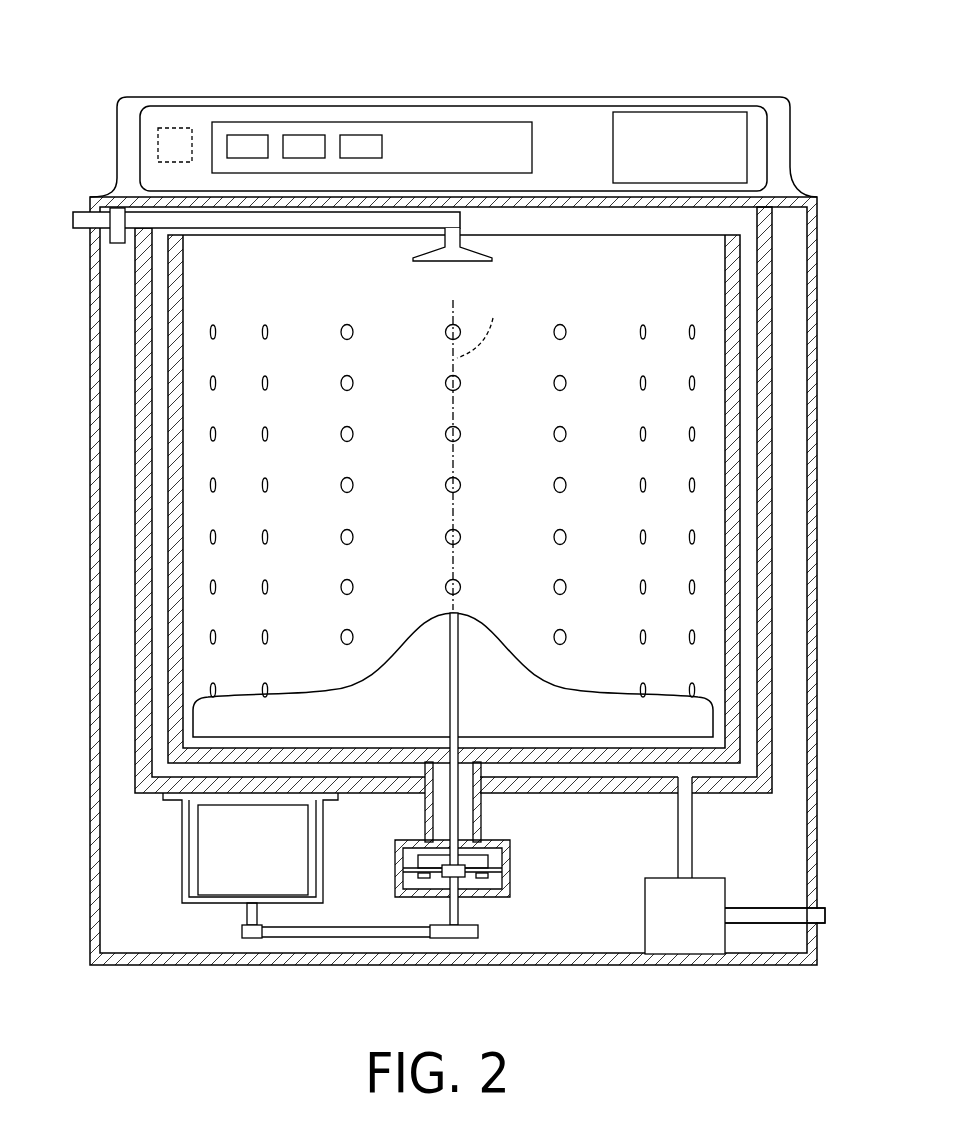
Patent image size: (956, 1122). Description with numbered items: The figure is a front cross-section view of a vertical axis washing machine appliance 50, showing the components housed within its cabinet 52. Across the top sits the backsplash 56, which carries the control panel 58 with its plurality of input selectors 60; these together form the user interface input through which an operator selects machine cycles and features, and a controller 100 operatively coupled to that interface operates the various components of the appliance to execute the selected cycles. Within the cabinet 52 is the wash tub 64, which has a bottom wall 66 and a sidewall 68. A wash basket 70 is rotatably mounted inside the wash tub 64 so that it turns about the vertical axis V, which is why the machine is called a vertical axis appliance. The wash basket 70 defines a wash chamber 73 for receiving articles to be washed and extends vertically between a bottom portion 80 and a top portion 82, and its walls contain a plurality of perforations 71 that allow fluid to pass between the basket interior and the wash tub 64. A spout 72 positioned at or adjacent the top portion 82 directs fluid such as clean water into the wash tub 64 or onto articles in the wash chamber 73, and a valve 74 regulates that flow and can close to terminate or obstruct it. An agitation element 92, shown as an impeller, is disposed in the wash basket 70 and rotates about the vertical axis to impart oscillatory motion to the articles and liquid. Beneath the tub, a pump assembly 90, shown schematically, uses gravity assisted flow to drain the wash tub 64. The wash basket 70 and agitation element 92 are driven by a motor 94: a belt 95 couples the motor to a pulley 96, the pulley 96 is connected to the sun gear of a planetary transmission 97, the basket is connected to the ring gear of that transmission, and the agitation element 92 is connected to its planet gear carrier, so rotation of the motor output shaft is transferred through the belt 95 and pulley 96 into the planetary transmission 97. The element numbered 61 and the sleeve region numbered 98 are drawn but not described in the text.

The washing machine appliance 50 is at (113, 70).
The cabinet 52 is at (818, 878).
The backsplash 56 is at (566, 136).
The control panel 58 is at (418, 140).
The input selectors 60 is at (248, 150).
The indicator 61 is at (682, 138).
The wash tub 64 is at (772, 568).
The bottom wall 66 is at (745, 775).
The sidewall 68 is at (773, 400).
The wash basket 70 is at (738, 259).
The perforations 71 is at (214, 434).
The spout 72 is at (462, 217).
The wash chamber 73 is at (588, 274).
The valve 74 is at (117, 211).
The bottom portion 80 is at (194, 263).
The top portion 82 is at (62, 258).
The pump assembly 90 is at (692, 938).
The agitation element 92 is at (475, 612).
The motor 94 is at (217, 838).
The belt 95 is at (333, 927).
The pulley 96 is at (478, 931).
The planetary transmission 97 is at (471, 881).
The drive shaft sleeve 98 is at (463, 808).
The controller 100 is at (175, 128).